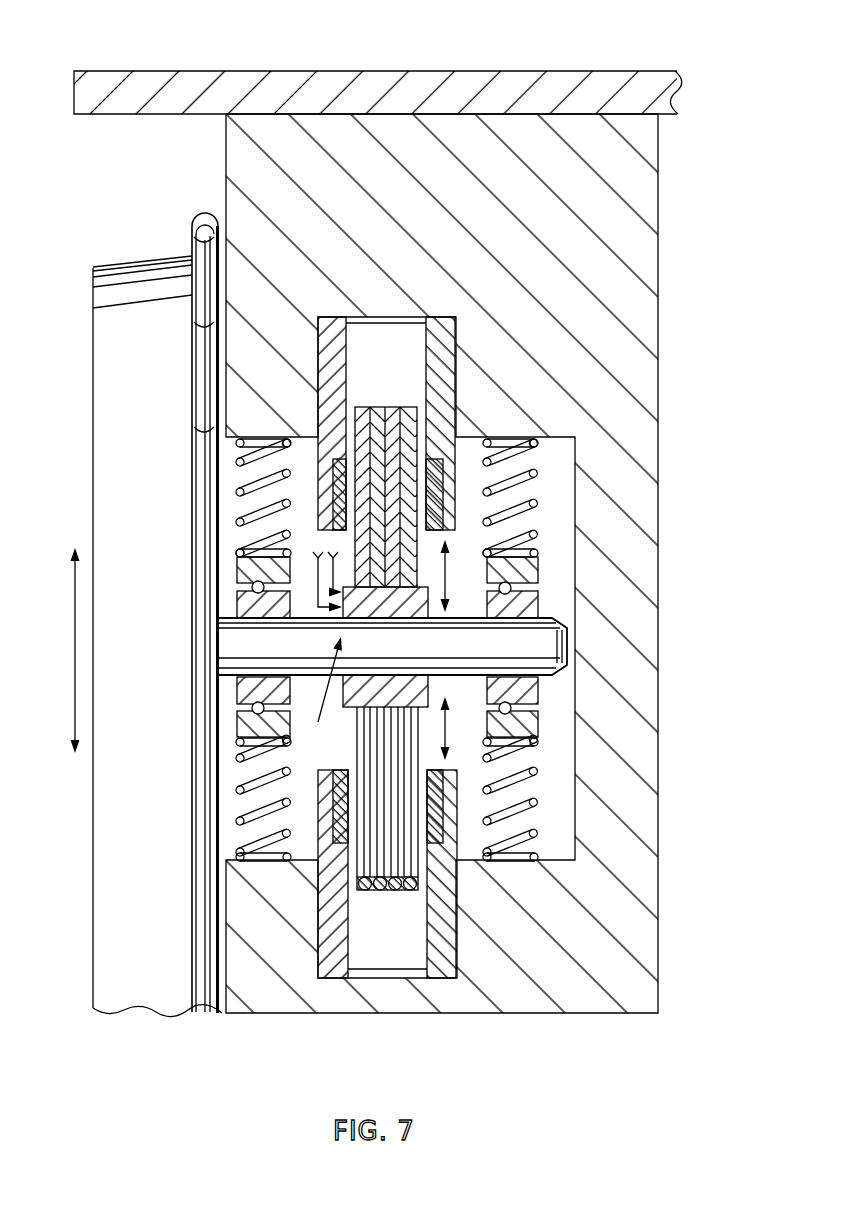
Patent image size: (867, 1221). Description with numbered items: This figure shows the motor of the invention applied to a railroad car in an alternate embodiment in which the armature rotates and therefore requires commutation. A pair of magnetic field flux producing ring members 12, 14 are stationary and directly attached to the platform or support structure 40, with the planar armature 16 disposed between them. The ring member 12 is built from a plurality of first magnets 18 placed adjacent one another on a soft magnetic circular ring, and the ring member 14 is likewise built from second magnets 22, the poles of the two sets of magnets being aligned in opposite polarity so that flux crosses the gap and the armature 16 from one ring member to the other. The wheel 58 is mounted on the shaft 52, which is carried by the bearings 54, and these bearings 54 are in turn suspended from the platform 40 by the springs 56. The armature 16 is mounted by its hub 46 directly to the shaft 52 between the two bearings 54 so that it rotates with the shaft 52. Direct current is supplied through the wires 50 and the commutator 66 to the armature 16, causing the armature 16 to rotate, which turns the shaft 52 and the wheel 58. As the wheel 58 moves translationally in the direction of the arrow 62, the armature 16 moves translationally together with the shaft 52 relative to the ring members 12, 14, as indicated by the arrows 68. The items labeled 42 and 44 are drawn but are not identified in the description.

The ring member 12 is at (323, 317).
The ring member 14 is at (449, 317).
The planar armature 16 is at (396, 887).
The first magnets 18 is at (326, 822).
The second magnets 22 is at (440, 845).
The platform 40 is at (706, 181).
The mounting plate 42 is at (558, 96).
The assembly 44 is at (480, 64).
The hub 46 is at (428, 688).
The wires 50 is at (298, 584).
The shaft 52 is at (522, 645).
The bearings 54 is at (235, 729).
The springs 56 is at (240, 490).
The wheel 58 is at (148, 262).
The arrow 62 is at (75, 617).
The commutator 66 is at (324, 691).
The arrows 68 is at (447, 585).